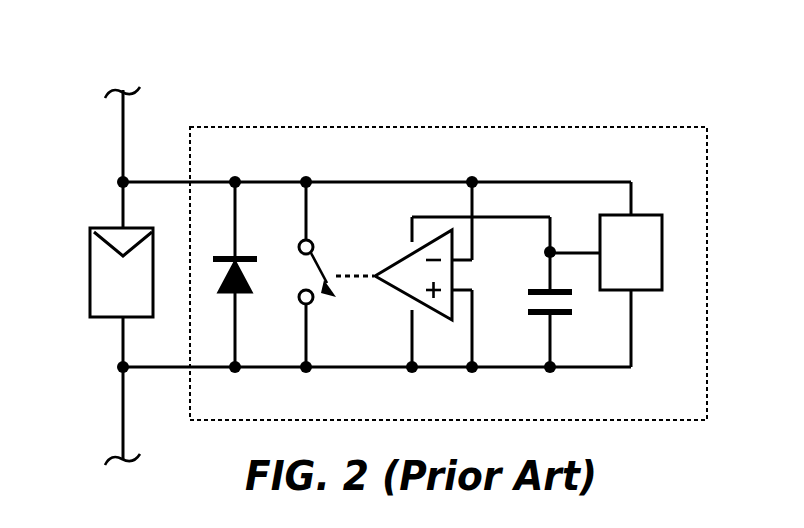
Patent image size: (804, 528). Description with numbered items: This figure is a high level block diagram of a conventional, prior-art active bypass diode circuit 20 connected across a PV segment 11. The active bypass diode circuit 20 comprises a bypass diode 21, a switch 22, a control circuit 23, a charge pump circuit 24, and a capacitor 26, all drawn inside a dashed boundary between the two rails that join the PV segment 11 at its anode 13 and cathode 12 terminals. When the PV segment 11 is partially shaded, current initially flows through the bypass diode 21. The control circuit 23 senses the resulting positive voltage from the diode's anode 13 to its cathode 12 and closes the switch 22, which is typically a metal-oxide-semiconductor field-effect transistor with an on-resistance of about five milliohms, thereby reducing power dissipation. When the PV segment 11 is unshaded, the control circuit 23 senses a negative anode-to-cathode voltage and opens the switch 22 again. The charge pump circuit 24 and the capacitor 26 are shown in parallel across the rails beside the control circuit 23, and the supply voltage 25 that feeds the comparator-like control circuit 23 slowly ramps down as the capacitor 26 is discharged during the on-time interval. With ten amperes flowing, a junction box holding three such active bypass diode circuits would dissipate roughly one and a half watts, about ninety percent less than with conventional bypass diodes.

The PV segment 11 is at (90, 283).
The cathode 12 is at (122, 151).
The anode 13 is at (122, 408).
The active bypass diode circuit 20 is at (260, 127).
The bypass diode 21 is at (254, 257).
The switch 22 is at (299, 313).
The control circuit 23 is at (384, 288).
The charge pump circuit 24 is at (651, 291).
The supply voltage 25 is at (409, 242).
The capacitor 26 is at (528, 292).